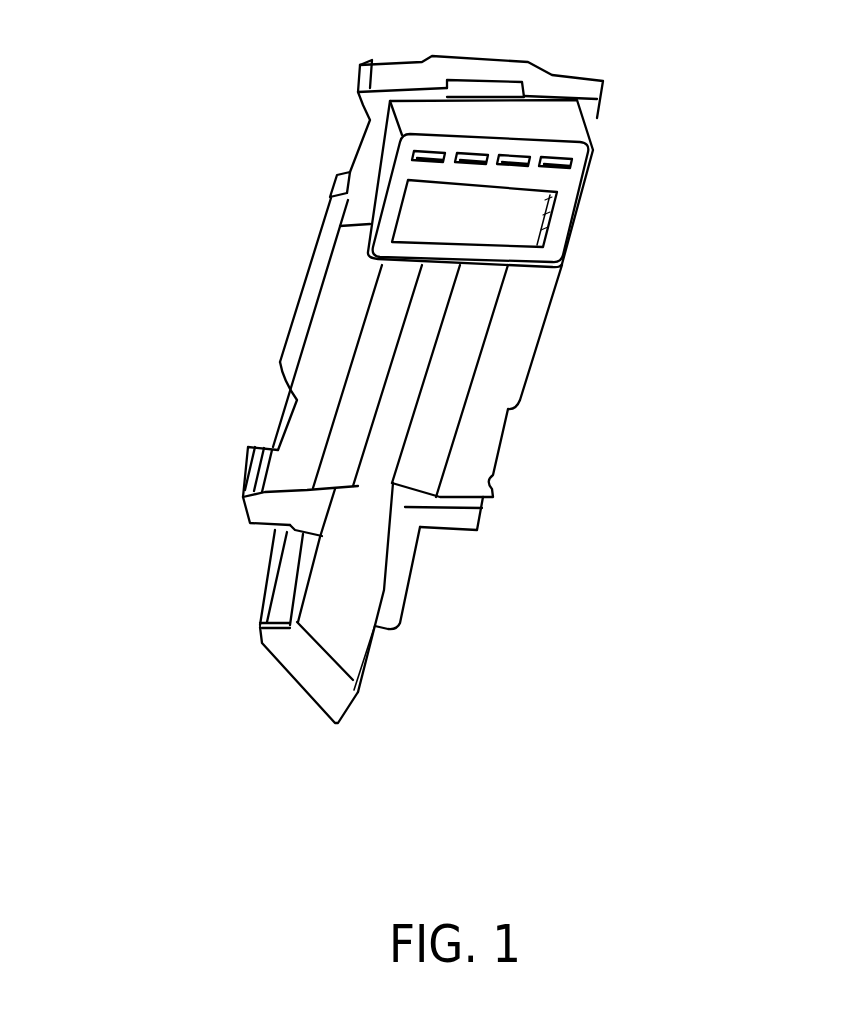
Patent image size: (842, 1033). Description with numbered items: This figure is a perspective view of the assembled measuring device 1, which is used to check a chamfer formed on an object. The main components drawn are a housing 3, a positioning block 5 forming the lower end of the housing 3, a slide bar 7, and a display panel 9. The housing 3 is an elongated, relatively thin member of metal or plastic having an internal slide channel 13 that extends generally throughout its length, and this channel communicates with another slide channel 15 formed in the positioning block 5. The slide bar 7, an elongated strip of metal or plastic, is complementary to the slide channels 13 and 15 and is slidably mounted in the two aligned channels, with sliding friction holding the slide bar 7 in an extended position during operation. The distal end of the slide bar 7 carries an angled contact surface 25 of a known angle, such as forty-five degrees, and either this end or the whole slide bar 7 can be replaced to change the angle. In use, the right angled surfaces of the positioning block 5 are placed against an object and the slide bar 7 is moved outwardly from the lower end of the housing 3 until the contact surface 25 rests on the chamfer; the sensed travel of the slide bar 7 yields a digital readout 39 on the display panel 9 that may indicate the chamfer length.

The measuring device 1 is at (636, 240).
The housing 3 is at (538, 355).
The positioning block 5 is at (246, 512).
The slide bar 7 is at (343, 628).
The display panel 9 is at (365, 190).
The slide channel 13 is at (410, 328).
The slide channel 15 is at (398, 538).
The angled contact surface 25 is at (292, 672).
The digital readout 39 is at (527, 205).